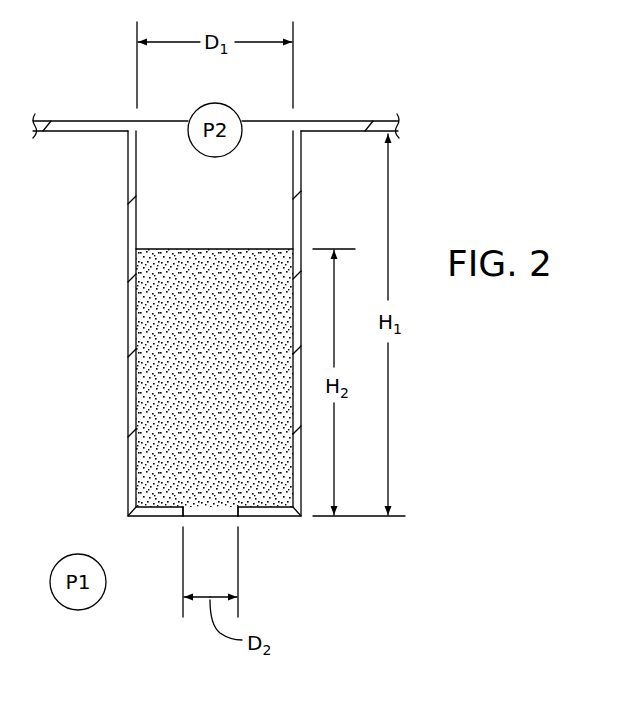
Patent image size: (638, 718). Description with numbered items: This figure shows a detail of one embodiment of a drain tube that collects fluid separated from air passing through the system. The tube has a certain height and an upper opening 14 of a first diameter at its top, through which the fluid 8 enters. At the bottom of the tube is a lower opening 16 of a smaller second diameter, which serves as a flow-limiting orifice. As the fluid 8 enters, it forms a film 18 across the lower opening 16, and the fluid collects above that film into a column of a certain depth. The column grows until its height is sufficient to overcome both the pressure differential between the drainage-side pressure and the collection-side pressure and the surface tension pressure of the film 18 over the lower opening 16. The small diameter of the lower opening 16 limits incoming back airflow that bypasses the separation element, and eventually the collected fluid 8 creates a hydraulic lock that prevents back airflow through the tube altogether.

The fluid 8 is at (178, 393).
The upper opening 14 is at (257, 121).
The lower opening 16 is at (213, 516).
The film 18 is at (208, 516).